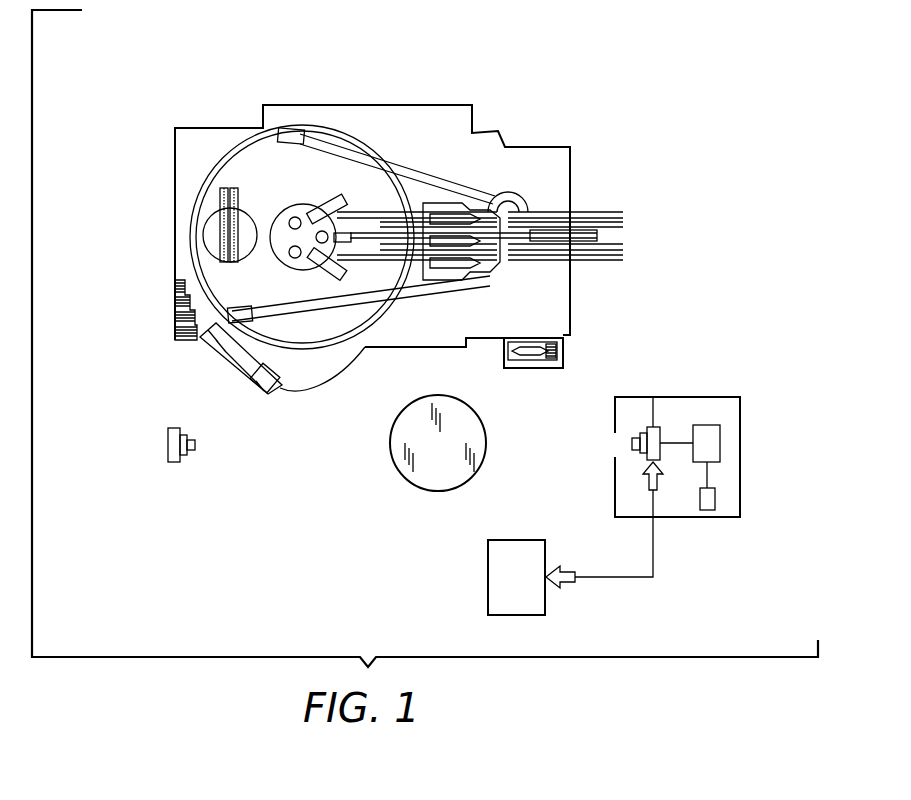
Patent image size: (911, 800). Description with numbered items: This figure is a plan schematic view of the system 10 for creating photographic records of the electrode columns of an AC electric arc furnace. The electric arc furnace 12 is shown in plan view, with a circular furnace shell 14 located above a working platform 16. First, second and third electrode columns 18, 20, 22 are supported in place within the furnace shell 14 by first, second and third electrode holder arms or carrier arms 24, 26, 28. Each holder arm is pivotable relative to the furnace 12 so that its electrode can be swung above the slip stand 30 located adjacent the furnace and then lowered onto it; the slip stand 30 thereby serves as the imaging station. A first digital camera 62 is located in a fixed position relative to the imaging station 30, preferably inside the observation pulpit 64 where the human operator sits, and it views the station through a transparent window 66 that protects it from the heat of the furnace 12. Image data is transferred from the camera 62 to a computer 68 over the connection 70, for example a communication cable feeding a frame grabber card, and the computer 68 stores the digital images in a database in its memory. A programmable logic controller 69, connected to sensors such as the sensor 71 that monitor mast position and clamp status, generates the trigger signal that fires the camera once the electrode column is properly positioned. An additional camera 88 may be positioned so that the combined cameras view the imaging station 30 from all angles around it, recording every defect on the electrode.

The system 10 is at (125, 515).
The electric arc furnace 12 is at (207, 195).
The furnace shell 14 is at (197, 270).
The working platform 16 is at (185, 312).
The first electrode column 18 is at (294, 216).
The second electrode column 20 is at (392, 210).
The third electrode column 22 is at (297, 258).
The first electrode holder arm 24 is at (412, 202).
The second electrode holder arm 26 is at (523, 205).
The third electrode holder arm 28 is at (467, 262).
The slip stand 30 is at (415, 470).
The first digital camera 62 is at (653, 390).
The observation pulpit 64 is at (710, 397).
The transparent window 66 is at (614, 490).
The computer 68 is at (492, 548).
The programmable logic controller 69 is at (713, 442).
The connection 70 is at (656, 546).
The sensor 71 is at (714, 495).
The additional camera 88 is at (172, 465).